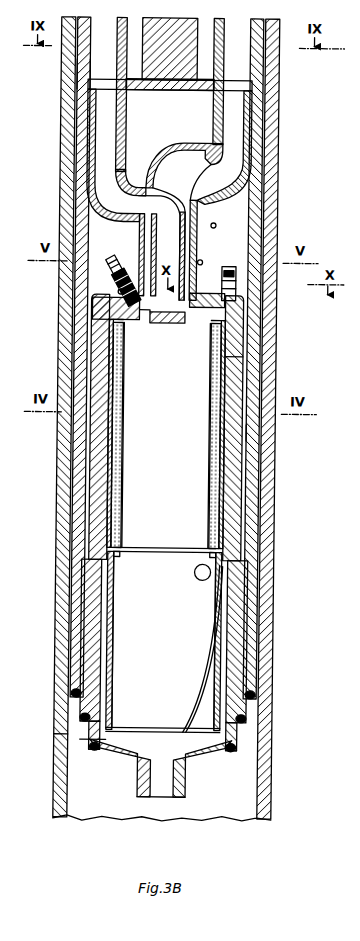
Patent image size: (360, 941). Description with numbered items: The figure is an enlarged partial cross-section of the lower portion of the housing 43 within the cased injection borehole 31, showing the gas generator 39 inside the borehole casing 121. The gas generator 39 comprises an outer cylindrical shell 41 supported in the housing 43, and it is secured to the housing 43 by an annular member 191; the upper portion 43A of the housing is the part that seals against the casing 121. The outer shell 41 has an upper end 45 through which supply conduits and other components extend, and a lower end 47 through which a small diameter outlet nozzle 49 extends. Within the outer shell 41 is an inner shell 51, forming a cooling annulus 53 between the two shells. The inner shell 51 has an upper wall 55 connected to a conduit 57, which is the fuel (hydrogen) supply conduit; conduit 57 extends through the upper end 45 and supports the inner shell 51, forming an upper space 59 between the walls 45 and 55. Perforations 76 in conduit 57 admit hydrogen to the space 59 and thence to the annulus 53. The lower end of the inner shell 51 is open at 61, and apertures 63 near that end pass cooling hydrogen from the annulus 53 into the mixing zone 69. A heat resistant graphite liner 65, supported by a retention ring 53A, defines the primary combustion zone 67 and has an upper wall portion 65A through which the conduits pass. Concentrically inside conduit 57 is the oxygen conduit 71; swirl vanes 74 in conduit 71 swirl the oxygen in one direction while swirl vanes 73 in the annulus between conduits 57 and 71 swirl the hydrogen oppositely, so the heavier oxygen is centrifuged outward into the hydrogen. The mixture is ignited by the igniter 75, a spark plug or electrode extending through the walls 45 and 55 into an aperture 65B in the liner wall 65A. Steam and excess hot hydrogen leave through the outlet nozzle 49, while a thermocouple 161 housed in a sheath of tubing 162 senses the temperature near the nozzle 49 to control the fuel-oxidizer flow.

The cased injection borehole 31 is at (106, 108).
The housing 43 is at (97, 466).
The upper portion of the housing 43A is at (49, 73).
The conduit 57 is at (80, 168).
The conduit 71 is at (118, 158).
The aperture 65B is at (74, 318).
The swirl vanes 74 is at (98, 345).
The swirl vanes 73 is at (81, 334).
The upper wall 55 is at (254, 308).
The igniter 75 is at (77, 280).
The perforations 76 is at (166, 253).
The upper end 45 is at (259, 244).
The upper space 59 is at (271, 284).
The cooling annulus 53 is at (167, 427).
The heat resistant liner 65 is at (116, 434).
The upper wall portion 65A is at (221, 337).
The primary combustion zone 67 is at (111, 434).
The inner shell 51 is at (272, 373).
The outer cylindrical shell 41 is at (283, 436).
The retention ring 53A is at (223, 561).
The mixing zone 69 is at (113, 641).
The thermocouple 161 is at (163, 705).
The apertures 63 is at (166, 650).
The annular member 191 is at (76, 736).
The sheath of tubing 162 is at (258, 649).
The lower end 47 is at (205, 769).
The outlet nozzle 49 is at (160, 830).
The gas generator 39 is at (98, 774).
The open end 61 is at (124, 778).
The borehole casing 121 is at (36, 741).